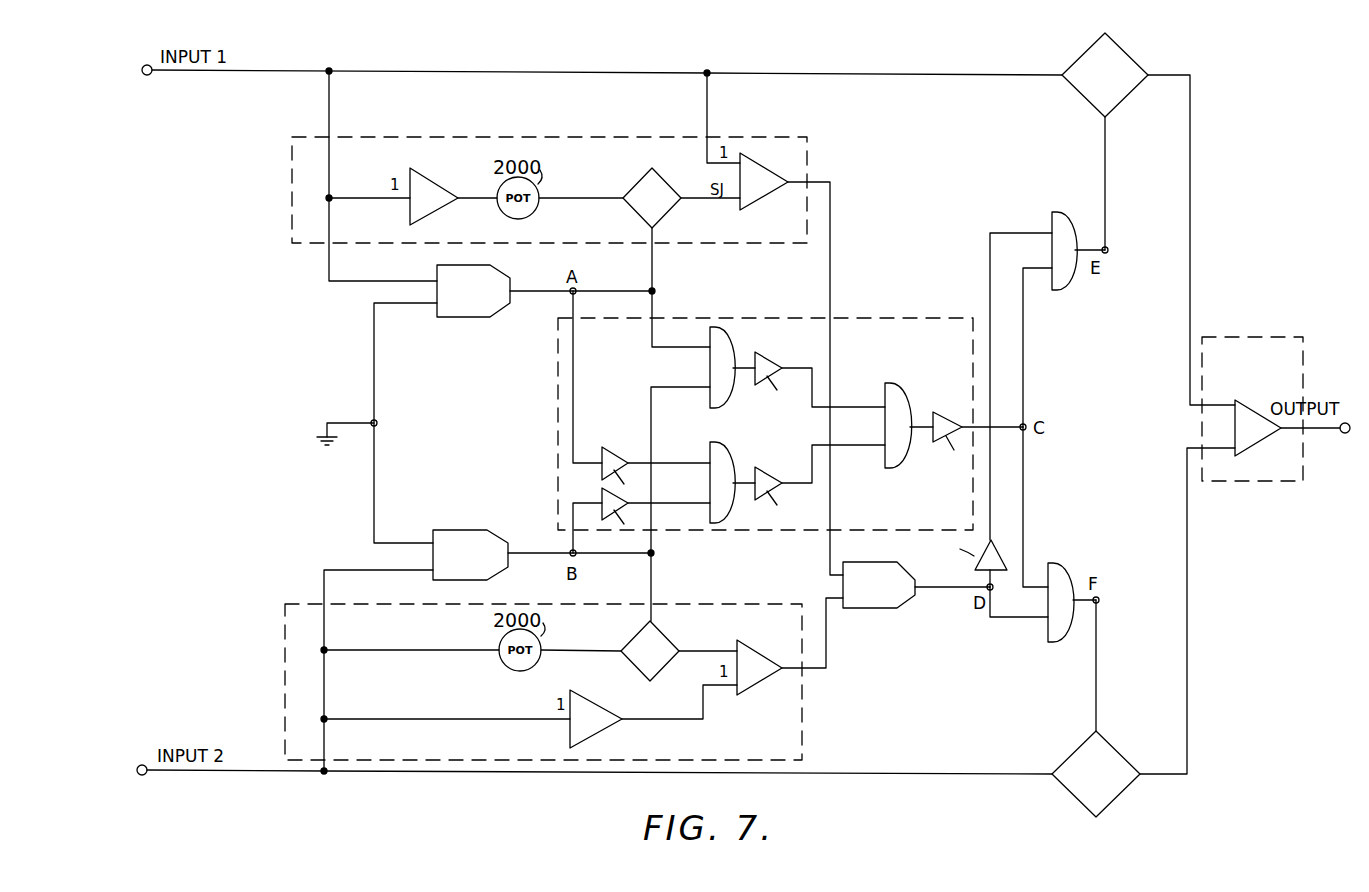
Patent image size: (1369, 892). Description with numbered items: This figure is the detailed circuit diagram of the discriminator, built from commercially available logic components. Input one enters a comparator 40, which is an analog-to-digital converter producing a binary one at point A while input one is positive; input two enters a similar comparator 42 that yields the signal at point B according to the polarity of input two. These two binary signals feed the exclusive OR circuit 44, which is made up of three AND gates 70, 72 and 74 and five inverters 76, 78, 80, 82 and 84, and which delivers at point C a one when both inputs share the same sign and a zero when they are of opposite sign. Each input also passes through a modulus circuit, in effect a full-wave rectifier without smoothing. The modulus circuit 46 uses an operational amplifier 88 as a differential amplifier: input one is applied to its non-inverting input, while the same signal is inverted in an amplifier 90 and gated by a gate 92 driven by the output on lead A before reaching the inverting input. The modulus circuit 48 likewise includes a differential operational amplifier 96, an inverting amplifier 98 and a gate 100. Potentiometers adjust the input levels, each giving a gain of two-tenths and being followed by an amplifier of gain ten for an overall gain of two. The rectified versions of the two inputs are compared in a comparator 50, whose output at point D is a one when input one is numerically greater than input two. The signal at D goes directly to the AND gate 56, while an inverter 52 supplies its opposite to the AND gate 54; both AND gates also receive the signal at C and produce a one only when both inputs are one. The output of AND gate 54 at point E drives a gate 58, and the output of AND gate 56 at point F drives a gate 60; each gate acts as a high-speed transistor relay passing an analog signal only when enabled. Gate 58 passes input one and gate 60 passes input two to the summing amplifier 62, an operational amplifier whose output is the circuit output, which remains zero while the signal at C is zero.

The comparator 40 is at (470, 310).
The comparator 42 is at (470, 537).
The exclusive OR circuit 44 is at (848, 318).
The modulus circuit 46 is at (354, 137).
The modulus circuit 48 is at (802, 718).
The comparator 50 is at (905, 598).
The inverter 52 is at (1005, 558).
The AND gate 54 is at (1054, 220).
The AND gate 56 is at (1070, 570).
The gate 58 is at (1128, 96).
The gate 60 is at (1070, 752).
The summing amplifier 62 is at (1258, 482).
The AND gate 70 is at (709, 371).
The AND gate 72 is at (709, 485).
The AND gate 74 is at (897, 384).
The inverter 76 is at (604, 474).
The inverter 78 is at (616, 520).
The inverter 80 is at (770, 380).
The inverter 82 is at (770, 496).
The inverter 84 is at (948, 446).
The operational amplifier 88 is at (758, 200).
The amplifier 90 is at (435, 213).
The gate 92 is at (670, 215).
The differential operational amplifier 96 is at (757, 690).
The inverting amplifier 98 is at (605, 732).
The gate 100 is at (664, 636).